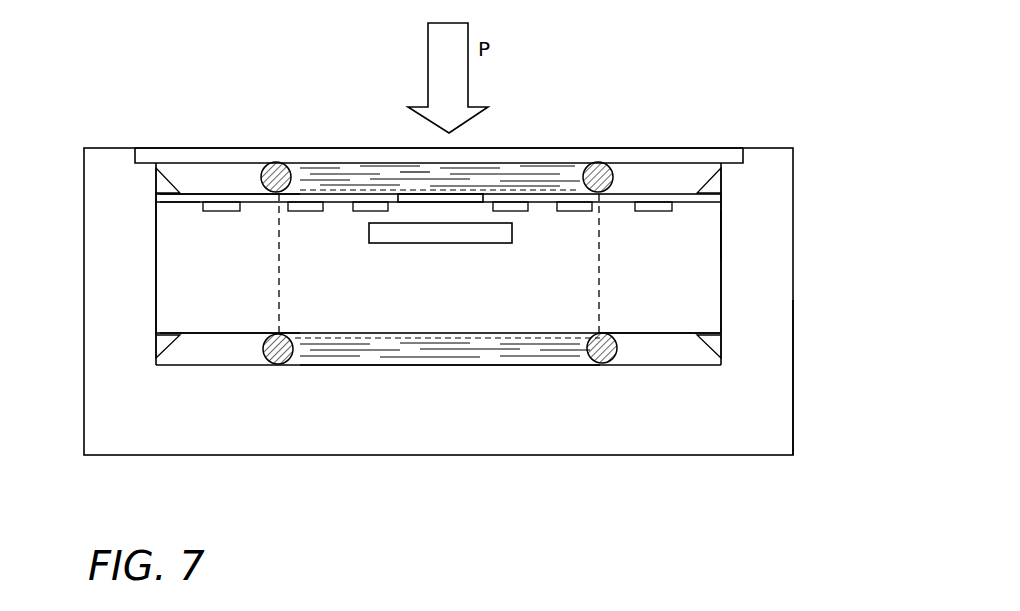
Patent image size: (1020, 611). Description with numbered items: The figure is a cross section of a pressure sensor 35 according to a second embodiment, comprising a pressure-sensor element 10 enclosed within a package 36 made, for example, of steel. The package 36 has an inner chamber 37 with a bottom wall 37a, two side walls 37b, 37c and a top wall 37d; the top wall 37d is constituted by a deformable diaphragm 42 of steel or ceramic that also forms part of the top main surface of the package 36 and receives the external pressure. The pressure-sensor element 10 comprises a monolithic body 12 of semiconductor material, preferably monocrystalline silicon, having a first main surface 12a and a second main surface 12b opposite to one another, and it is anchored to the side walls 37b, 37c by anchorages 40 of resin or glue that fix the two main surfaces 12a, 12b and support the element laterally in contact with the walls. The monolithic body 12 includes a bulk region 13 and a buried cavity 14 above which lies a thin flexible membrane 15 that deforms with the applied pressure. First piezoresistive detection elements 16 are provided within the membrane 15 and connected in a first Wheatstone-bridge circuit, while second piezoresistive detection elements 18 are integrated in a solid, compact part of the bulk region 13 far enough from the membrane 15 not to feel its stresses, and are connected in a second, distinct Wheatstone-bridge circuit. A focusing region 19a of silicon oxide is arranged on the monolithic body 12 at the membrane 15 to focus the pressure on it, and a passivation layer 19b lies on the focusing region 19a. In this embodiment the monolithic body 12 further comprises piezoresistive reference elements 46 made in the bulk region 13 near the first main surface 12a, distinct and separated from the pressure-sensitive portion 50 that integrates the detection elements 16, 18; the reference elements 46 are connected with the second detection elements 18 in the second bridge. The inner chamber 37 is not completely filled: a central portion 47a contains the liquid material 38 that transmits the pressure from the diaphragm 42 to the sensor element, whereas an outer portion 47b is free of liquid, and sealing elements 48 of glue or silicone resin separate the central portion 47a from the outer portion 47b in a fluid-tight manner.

The pressure-sensor element 10 is at (729, 228).
The monolithic body 12 is at (707, 281).
The first main surface 12a is at (195, 192).
The second main surface 12b is at (217, 339).
The bulk region 13 is at (664, 312).
The cavity 14 is at (453, 239).
The membrane 15 is at (465, 213).
The first piezoresistive detection elements 16 is at (365, 212).
The second piezoresistive detection elements 18 is at (310, 212).
The focusing region 19a is at (420, 203).
The passivation layer 19b is at (157, 204).
The pressure sensor 35 is at (826, 214).
The package 36 is at (799, 414).
The inner chamber 37 is at (249, 357).
The bottom wall 37a is at (511, 370).
The side wall 37b is at (151, 273).
The side wall 37c is at (727, 300).
The top wall 37d is at (497, 148).
The liquid material 38 is at (420, 170).
The anchorages 40 is at (157, 182).
The deformable diaphragm 42 is at (648, 150).
The piezoresistive reference elements 46 is at (212, 212).
The central portion 47a is at (377, 353).
The outer portion 47b is at (647, 353).
The sealing elements 48 is at (265, 167).
The pressure-sensitive portion 50 is at (278, 223).